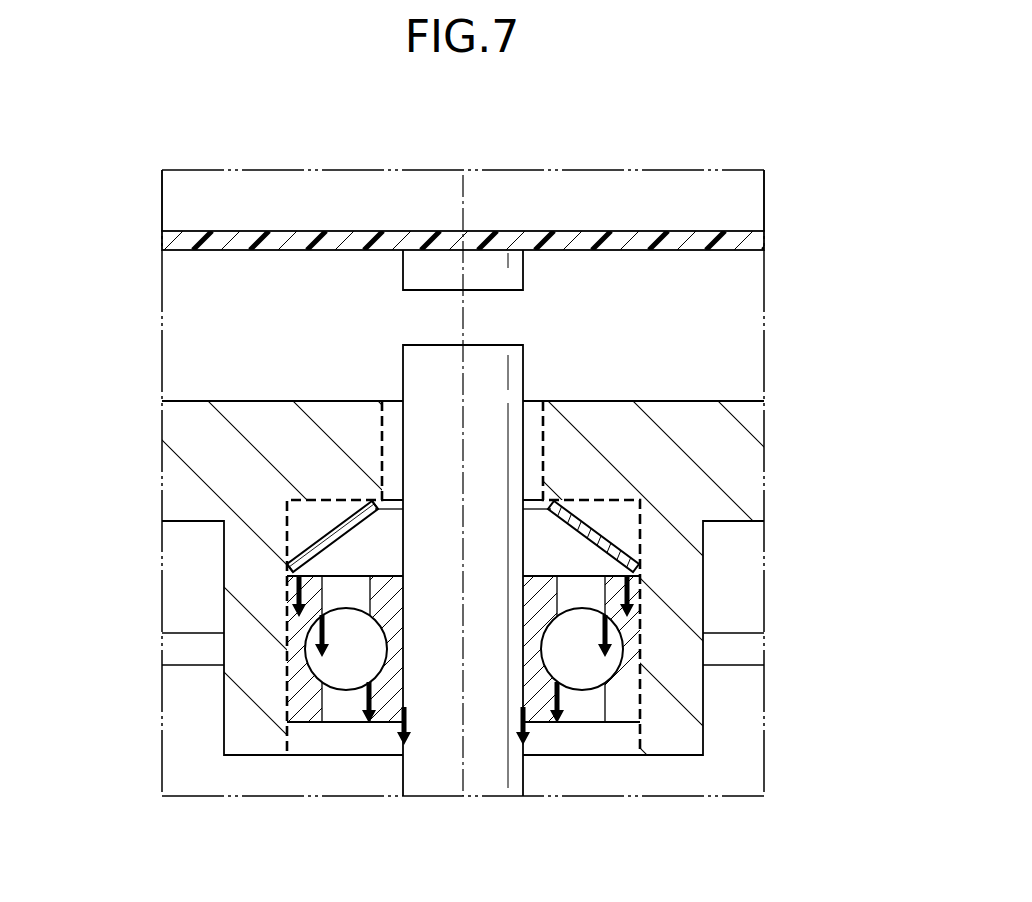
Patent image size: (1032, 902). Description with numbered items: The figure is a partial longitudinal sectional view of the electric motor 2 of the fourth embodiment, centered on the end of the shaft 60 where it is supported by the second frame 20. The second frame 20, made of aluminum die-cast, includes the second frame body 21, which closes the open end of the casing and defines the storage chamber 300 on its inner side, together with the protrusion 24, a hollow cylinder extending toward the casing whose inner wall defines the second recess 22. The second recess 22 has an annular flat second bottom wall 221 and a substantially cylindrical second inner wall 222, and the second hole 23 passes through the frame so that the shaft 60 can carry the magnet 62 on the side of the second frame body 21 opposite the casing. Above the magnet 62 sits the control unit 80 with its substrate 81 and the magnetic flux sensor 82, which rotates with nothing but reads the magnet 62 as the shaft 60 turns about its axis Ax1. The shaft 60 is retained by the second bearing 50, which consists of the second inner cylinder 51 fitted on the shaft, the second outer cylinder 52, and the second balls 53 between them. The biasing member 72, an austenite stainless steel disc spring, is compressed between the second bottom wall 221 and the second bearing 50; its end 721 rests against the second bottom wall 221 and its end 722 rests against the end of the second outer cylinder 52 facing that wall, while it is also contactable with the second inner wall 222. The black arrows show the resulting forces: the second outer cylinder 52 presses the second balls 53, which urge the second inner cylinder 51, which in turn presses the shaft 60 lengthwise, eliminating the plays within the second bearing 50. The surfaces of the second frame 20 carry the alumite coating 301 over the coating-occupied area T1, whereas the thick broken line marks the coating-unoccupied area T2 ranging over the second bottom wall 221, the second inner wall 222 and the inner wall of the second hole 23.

The electric motor 2 is at (681, 131).
The control unit 80 is at (602, 185).
The substrate 81 is at (727, 237).
The magnetic flux sensor 82 is at (510, 270).
The magnet 62 is at (432, 358).
The rotation axis Ax1 is at (460, 209).
The coating-occupied area T1 is at (227, 400).
The coating 301 is at (185, 399).
The second hole 23 is at (541, 401).
The coating-unoccupied area T2 is at (553, 458).
The end of biasing member 721 is at (367, 497).
The second frame 20 is at (747, 463).
The second frame body 21 is at (465, 451).
The biasing member 72 is at (323, 543).
The second bottom wall 221 is at (570, 503).
The end of biasing member 722 is at (295, 585).
The protrusion 24 is at (233, 720).
The storage chamber 300 is at (740, 735).
The second recess 22 is at (633, 742).
The second inner wall 222 is at (581, 649).
The second bearing 50 is at (350, 722).
The second inner cylinder 51 is at (385, 717).
The second outer cylinder 52 is at (297, 717).
The second balls 53 is at (338, 680).
The shaft 60 is at (483, 780).